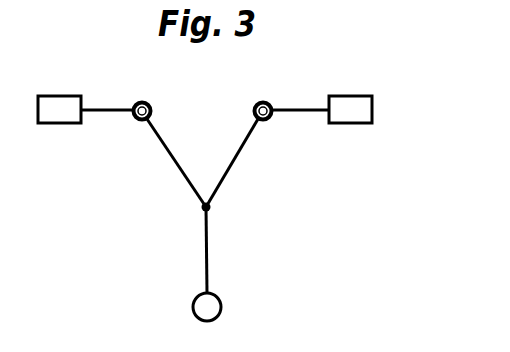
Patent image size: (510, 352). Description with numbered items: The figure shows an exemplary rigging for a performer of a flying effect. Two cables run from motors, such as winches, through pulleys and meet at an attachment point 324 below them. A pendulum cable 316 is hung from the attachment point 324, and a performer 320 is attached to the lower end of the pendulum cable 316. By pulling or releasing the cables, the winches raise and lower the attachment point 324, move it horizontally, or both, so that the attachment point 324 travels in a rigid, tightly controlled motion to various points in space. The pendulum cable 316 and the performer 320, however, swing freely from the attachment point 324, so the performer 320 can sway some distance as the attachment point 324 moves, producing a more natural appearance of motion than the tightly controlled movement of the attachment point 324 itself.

The pendulum cable 316 is at (206, 252).
The performer 320 is at (217, 296).
The attachment point 324 is at (210, 210).